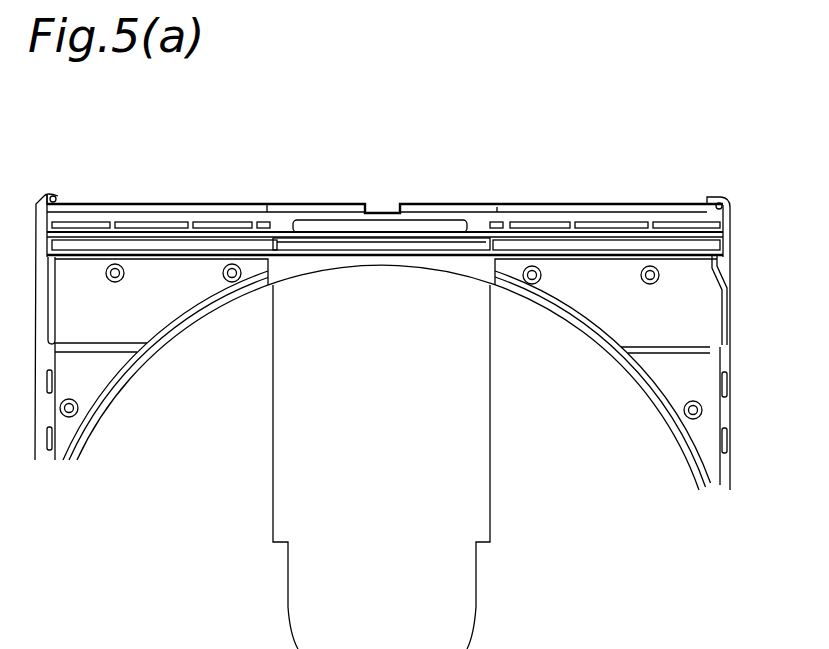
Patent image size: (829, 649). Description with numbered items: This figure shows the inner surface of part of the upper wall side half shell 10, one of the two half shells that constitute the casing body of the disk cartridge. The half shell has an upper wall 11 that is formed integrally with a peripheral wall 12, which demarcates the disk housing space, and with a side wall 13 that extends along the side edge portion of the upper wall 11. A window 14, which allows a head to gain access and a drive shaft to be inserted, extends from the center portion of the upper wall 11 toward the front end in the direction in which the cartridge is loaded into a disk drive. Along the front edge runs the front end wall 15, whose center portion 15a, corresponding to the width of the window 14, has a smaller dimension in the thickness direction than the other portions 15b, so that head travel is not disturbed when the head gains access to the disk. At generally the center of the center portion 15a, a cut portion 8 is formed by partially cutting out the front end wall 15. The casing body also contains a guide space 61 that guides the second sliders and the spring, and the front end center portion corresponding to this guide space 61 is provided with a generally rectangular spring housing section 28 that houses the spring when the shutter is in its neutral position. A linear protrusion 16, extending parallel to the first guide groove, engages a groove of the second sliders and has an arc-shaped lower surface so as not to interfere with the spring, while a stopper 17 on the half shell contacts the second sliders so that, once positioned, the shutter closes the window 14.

The cut portion 8 is at (383, 213).
The upper wall side half shell 10 is at (385, 235).
The upper wall 11 is at (150, 486).
The peripheral wall 12 is at (207, 317).
The side wall 13 is at (55, 303).
The window 14 is at (369, 385).
The front end wall 15 is at (163, 205).
The center portion of front end wall 15a is at (413, 205).
The other portion of front end wall 15b is at (643, 205).
The linear protrusion 16 is at (472, 235).
The stopper 17 is at (335, 225).
The spring housing section 28 is at (287, 238).
The guide space 61 is at (672, 247).